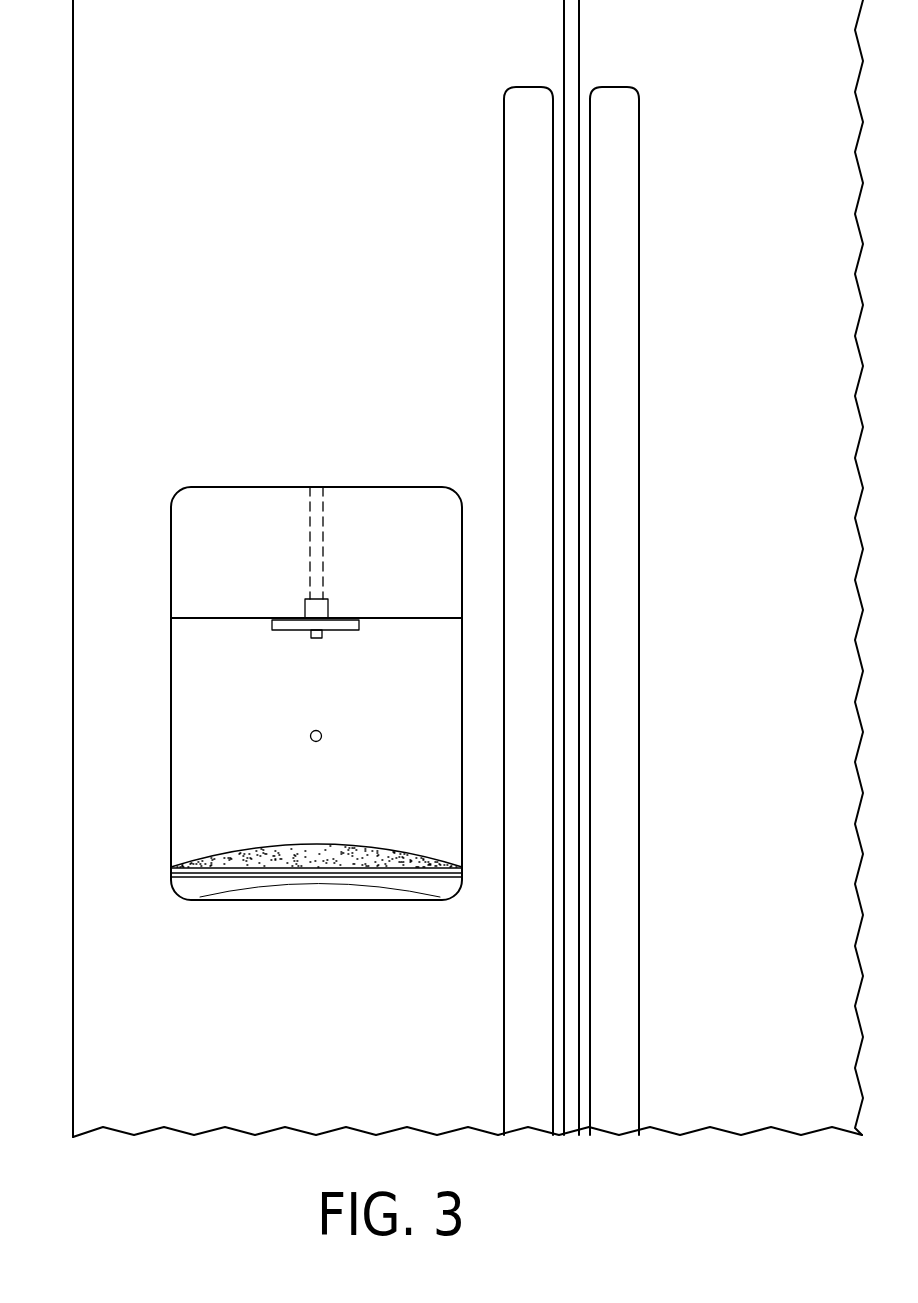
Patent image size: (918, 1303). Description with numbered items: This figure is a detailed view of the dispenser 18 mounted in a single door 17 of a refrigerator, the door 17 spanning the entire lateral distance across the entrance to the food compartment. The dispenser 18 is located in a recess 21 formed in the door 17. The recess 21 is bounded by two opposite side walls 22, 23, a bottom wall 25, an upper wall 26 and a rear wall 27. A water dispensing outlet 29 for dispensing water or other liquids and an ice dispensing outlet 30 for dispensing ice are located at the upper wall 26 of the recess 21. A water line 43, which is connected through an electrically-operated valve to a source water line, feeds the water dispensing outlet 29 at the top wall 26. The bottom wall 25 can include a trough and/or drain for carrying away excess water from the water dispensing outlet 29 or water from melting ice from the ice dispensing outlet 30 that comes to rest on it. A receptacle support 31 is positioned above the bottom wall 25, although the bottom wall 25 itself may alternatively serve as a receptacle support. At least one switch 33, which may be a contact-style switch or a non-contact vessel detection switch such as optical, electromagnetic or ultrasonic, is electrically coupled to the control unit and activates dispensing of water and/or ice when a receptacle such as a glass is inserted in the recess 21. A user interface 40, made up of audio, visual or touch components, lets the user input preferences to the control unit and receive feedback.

The door 17 is at (115, 1018).
The dispenser 18 is at (238, 438).
The recess 21 is at (229, 680).
The side wall 22 is at (176, 810).
The side wall 23 is at (458, 778).
The bottom wall 25 is at (227, 900).
The upper wall 26 is at (206, 625).
The rear wall 27 is at (427, 661).
The water dispensing outlet 29 is at (317, 640).
The ice dispensing outlet 30 is at (285, 633).
The receptacle support 31 is at (193, 863).
The switch 33 is at (320, 743).
The user interface 40 is at (200, 552).
The water line 43 is at (325, 530).